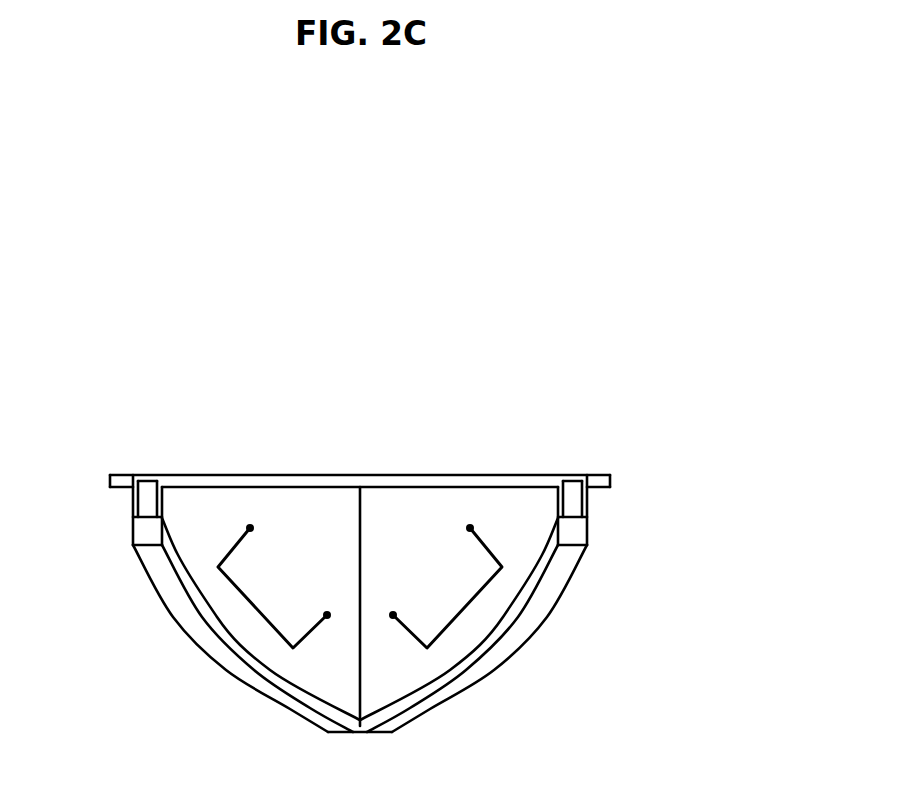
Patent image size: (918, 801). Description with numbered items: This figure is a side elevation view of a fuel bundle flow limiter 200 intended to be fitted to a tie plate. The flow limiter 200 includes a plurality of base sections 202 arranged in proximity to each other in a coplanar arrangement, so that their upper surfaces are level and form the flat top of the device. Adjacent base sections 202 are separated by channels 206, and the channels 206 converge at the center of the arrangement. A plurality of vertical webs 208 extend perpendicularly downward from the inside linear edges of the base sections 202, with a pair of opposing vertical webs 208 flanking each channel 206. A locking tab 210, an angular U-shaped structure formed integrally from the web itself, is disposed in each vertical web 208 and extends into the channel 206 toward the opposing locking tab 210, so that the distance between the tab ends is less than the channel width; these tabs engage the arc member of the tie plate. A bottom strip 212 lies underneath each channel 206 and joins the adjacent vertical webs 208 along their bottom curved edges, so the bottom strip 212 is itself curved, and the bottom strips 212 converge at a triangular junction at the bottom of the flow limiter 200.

The fuel bundle flow limiter 200 is at (608, 427).
The base section 202 is at (250, 481).
The channel 206 is at (577, 500).
The vertical web 208 is at (418, 670).
The locking tab 210 is at (253, 615).
The bottom strip 212 is at (290, 710).